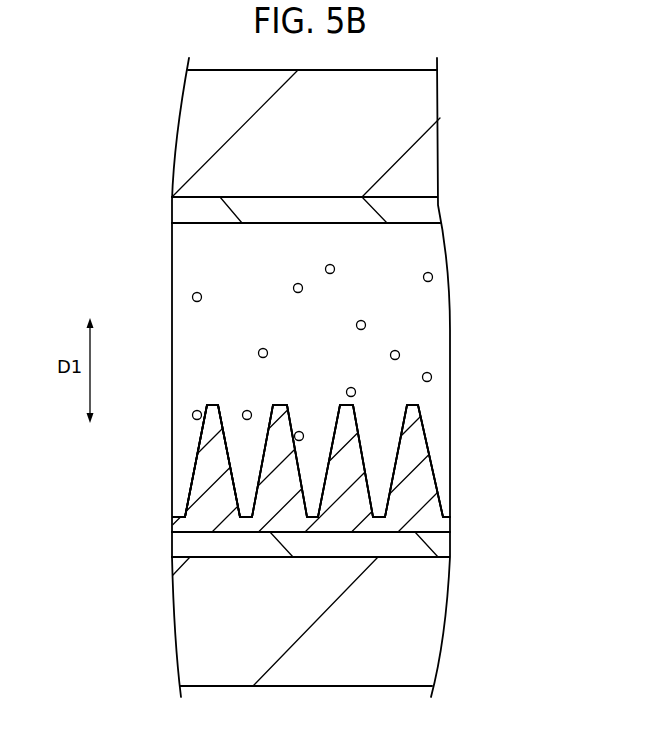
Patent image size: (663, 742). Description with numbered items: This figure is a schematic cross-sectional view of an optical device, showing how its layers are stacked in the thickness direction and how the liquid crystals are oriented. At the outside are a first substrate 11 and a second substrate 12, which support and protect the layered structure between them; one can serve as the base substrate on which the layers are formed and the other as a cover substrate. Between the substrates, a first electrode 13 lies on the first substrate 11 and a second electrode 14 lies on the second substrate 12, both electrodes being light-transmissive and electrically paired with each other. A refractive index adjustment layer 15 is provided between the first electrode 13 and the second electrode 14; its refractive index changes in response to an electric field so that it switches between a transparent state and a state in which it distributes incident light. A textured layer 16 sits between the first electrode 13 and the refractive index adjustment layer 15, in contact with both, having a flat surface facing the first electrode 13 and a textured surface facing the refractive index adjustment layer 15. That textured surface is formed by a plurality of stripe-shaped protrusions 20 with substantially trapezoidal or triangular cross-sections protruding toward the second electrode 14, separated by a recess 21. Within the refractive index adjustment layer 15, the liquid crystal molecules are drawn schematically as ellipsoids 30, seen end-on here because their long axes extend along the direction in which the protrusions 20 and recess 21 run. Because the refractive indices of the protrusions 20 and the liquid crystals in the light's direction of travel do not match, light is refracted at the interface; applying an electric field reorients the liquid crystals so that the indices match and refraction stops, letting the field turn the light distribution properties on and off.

The first substrate 11 is at (438, 620).
The second substrate 12 is at (432, 147).
The first electrode 13 is at (443, 543).
The second electrode 14 is at (433, 212).
The refractive index adjustment layer 15 is at (435, 353).
The textured layer 16 is at (428, 485).
The protrusion 20 is at (417, 433).
The recess 21 is at (232, 417).
The ellipsoid 30 is at (294, 286).